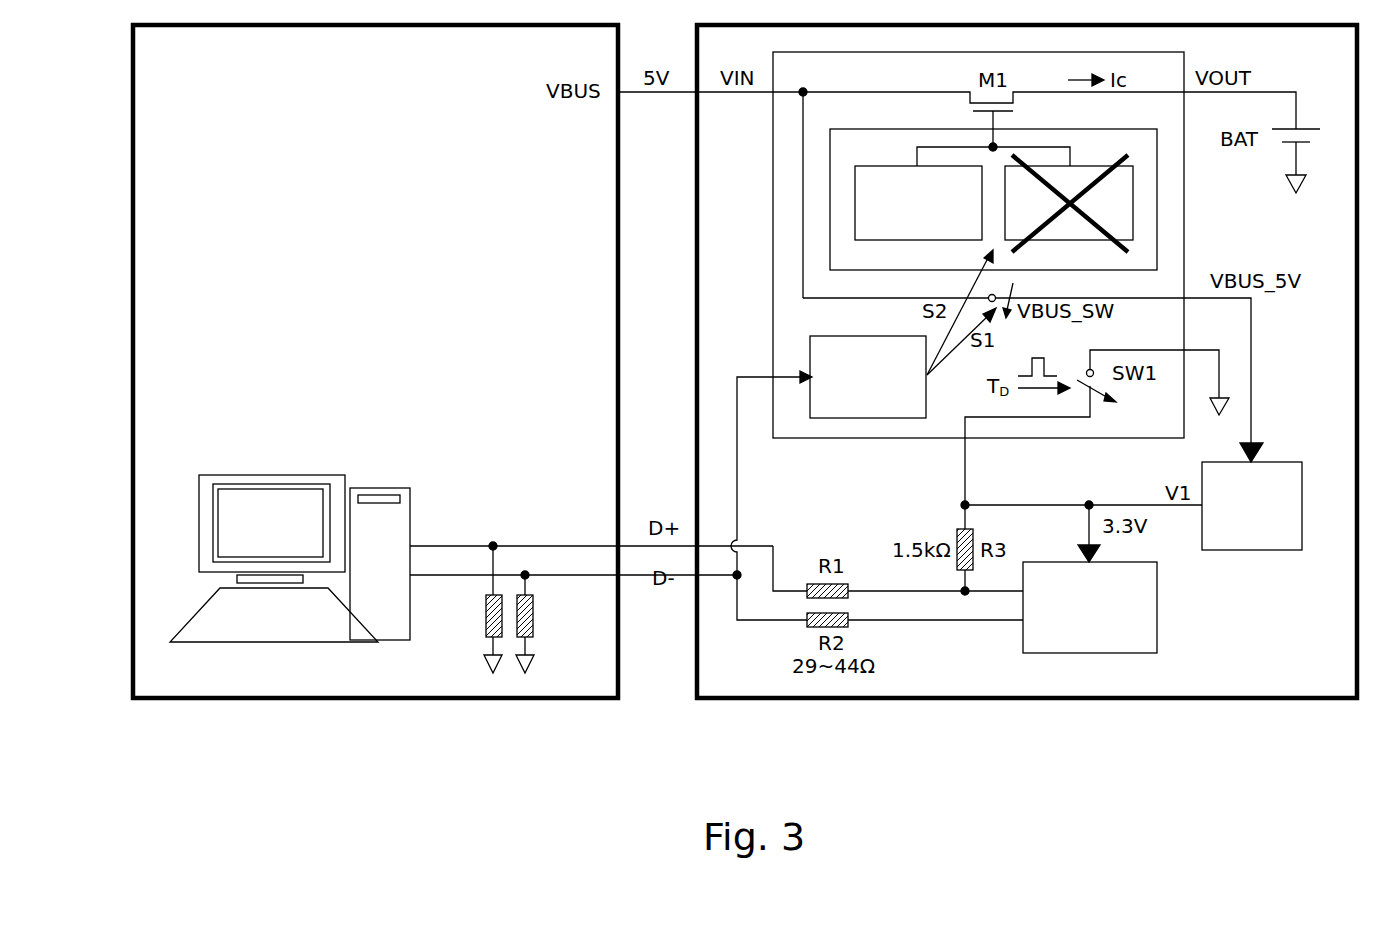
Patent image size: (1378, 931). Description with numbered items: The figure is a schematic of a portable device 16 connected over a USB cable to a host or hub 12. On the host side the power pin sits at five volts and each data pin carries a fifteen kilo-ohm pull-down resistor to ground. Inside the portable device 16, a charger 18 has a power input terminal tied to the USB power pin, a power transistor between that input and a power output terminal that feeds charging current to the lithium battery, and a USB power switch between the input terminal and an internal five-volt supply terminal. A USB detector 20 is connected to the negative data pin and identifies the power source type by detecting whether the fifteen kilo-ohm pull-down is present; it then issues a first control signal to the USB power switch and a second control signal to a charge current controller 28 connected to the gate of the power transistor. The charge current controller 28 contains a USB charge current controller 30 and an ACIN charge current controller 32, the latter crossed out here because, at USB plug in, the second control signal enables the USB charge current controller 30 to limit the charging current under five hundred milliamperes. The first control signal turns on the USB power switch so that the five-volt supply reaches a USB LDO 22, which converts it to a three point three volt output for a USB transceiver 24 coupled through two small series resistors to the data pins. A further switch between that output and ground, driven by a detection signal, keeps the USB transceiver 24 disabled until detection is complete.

The host or hub 12 is at (618, 360).
The portable device 16 is at (697, 360).
The charger 18 is at (773, 244).
The USB detector 20 is at (867, 418).
The linear drop-out (LDO) regulator 22 is at (1250, 550).
The USB transceiver 24 is at (1157, 608).
The charge current controller 28 is at (830, 198).
The USB charge current controller 30 is at (920, 240).
The ACIN charge current controller 32 is at (1133, 200).